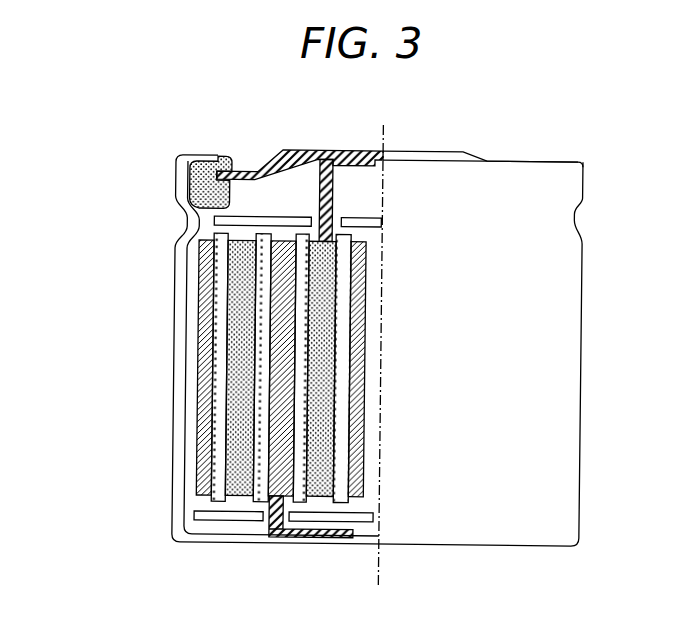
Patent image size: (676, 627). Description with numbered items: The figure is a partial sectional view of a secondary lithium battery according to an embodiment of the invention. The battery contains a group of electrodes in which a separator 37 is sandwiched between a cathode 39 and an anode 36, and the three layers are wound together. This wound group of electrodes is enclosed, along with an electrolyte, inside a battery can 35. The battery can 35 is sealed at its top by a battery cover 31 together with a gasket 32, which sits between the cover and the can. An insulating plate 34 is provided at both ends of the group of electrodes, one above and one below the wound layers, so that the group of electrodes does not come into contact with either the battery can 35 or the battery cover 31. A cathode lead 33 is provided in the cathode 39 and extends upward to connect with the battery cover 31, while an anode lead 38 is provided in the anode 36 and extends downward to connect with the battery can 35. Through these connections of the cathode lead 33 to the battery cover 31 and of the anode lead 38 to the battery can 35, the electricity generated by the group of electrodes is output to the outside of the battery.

The battery cover 31 is at (440, 152).
The gasket 32 is at (236, 162).
The cathode lead 33 is at (323, 187).
The insulating plate 34 is at (215, 219).
The battery can 35 is at (176, 382).
The anode 36 is at (200, 435).
The separator 37 is at (214, 503).
The anode lead 38 is at (266, 537).
The cathode 39 is at (323, 502).